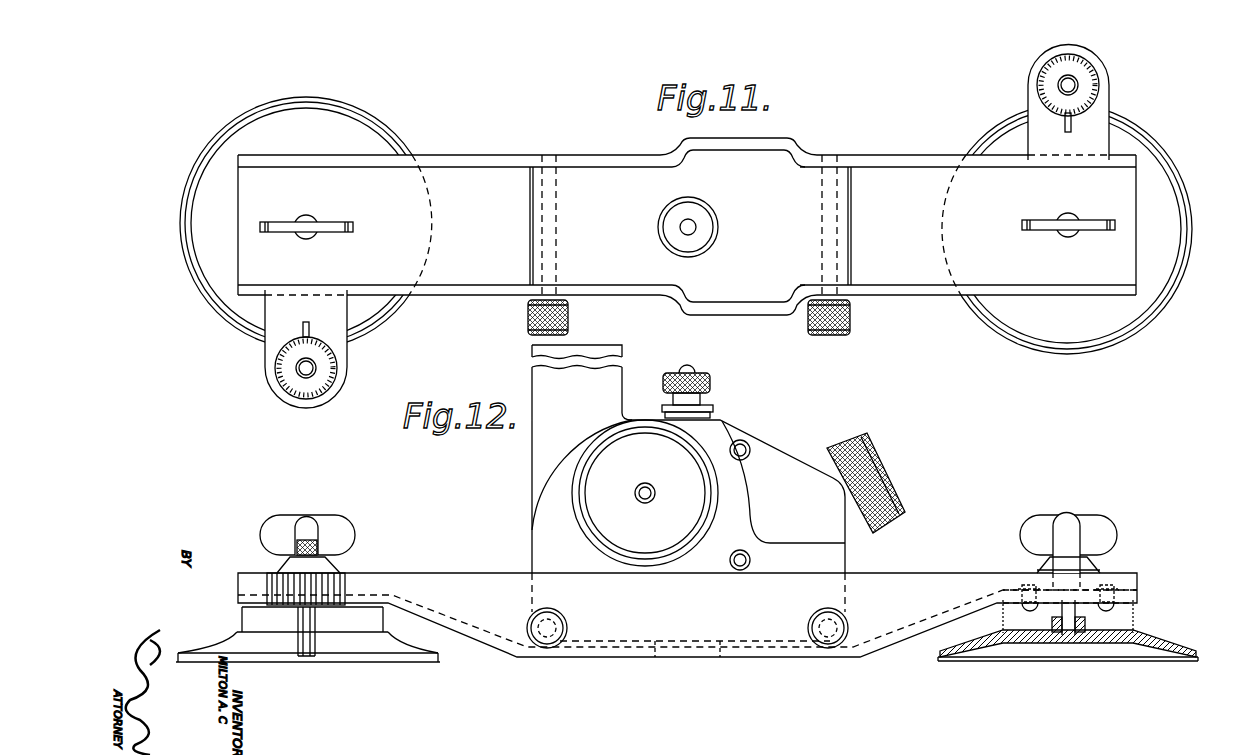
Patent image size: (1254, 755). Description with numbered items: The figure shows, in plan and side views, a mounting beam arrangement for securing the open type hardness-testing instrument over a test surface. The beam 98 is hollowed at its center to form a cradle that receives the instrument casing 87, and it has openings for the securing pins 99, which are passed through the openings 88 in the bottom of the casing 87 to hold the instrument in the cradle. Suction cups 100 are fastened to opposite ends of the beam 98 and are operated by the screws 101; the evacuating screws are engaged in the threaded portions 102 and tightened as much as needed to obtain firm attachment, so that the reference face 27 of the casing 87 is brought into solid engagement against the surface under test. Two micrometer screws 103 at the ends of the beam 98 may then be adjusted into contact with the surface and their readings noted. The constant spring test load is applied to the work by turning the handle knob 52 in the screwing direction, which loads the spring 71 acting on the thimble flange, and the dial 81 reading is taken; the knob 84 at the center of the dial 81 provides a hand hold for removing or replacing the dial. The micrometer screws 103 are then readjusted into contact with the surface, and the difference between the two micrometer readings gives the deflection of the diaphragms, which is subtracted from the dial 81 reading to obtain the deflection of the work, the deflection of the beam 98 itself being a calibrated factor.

In FIG. 12, the reference face 27 is at (664, 660).
In FIG. 12, the handle knob 52 is at (868, 461).
In FIG. 11, the spring 71 is at (704, 222).
In FIG. 12, the spring 71 is at (712, 388).
In FIG. 12, the dial 81 is at (645, 493).
In FIG. 12, the knob 84 is at (649, 499).
In FIG. 11, the casing 87 is at (797, 188).
In FIG. 12, the casing 87 is at (780, 461).
In FIG. 12, the openings 88 is at (532, 622).
In FIG. 11, the beam 98 is at (875, 177).
In FIG. 12, the beam 98 is at (915, 577).
In FIG. 11, the securing pins 99 is at (528, 320).
In FIG. 12, the securing pins 99 is at (545, 646).
In FIG. 11, the suction cups 100 is at (191, 207).
In FIG. 12, the suction cups 100 is at (396, 646).
In FIG. 11, the screws 101 is at (307, 228).
In FIG. 12, the screws 101 is at (332, 520).
In FIG. 12, the threaded portions 102 is at (1086, 628).
In FIG. 11, the micrometer screws 103 is at (300, 377).
In FIG. 12, the micrometer screws 103 is at (318, 547).